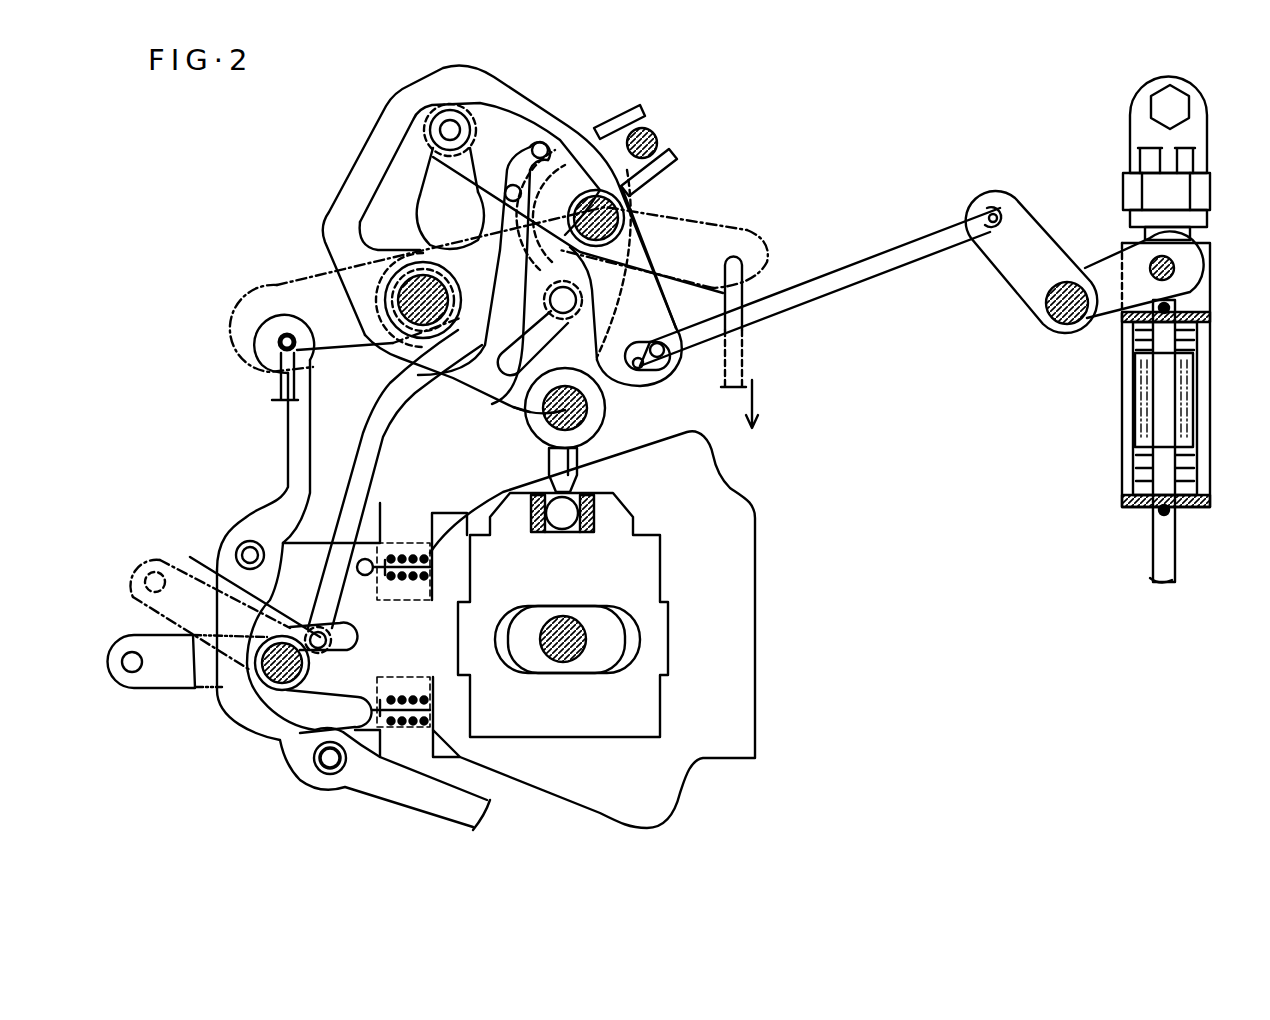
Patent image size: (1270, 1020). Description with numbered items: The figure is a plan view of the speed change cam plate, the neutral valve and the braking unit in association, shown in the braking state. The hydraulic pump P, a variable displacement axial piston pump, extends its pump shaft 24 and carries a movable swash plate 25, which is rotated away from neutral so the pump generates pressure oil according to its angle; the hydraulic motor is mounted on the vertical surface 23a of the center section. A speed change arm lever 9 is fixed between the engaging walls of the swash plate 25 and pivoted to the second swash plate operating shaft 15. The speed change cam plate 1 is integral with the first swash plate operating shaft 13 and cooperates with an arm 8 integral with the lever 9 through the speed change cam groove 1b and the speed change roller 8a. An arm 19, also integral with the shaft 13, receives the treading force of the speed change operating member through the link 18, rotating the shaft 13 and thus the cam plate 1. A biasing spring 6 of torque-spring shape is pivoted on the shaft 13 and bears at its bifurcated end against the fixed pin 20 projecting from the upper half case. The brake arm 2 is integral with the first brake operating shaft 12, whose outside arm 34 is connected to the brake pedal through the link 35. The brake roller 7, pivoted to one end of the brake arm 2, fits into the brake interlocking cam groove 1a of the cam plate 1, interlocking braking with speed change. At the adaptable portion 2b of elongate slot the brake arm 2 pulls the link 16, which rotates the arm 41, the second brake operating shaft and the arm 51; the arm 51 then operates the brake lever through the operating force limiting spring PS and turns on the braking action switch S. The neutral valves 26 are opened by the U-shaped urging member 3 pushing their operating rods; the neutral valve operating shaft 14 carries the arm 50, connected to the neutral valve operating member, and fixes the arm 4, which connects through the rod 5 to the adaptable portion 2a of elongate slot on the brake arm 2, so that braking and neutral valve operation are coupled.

The speed change cam plate 1 is at (367, 150).
The brake interlocking cam groove 1a is at (358, 228).
The speed change cam groove 1b is at (287, 420).
The brake arm 2 is at (677, 305).
The adaptable portion of elongate slot 2a is at (541, 142).
The adaptable portion of elongate slot 2b is at (662, 372).
The urging member 3 is at (313, 543).
The arm 4 is at (327, 663).
The rod 5 is at (382, 450).
The biasing spring 6 is at (608, 122).
The brake roller 7 is at (497, 187).
The arm 8 is at (613, 357).
The speed change roller 8a is at (507, 403).
The speed change arm lever 9 is at (550, 463).
The first brake operating shaft 12 is at (625, 213).
The first swash plate operating shaft 13 is at (407, 327).
The neutral valve operating shaft 14 is at (275, 680).
The second swash plate operating shaft 15 is at (587, 417).
The link 16 is at (817, 277).
The link 18 is at (253, 373).
The arm 19 is at (280, 280).
The fixed pin 20 is at (658, 136).
The vertical surface of center section 23a is at (762, 550).
The pump shaft 24 is at (570, 660).
The swash plate 25 is at (660, 697).
The neutral valve 26 is at (393, 620).
The arm 34 is at (723, 223).
The link 35 is at (743, 357).
The arm 41 is at (1030, 200).
The arm 50 is at (190, 557).
The arm 51 is at (1107, 307).
The hydraulic pump P is at (613, 759).
The braking action switch S is at (1130, 160).
The operating force limiting spring PS is at (1221, 381).